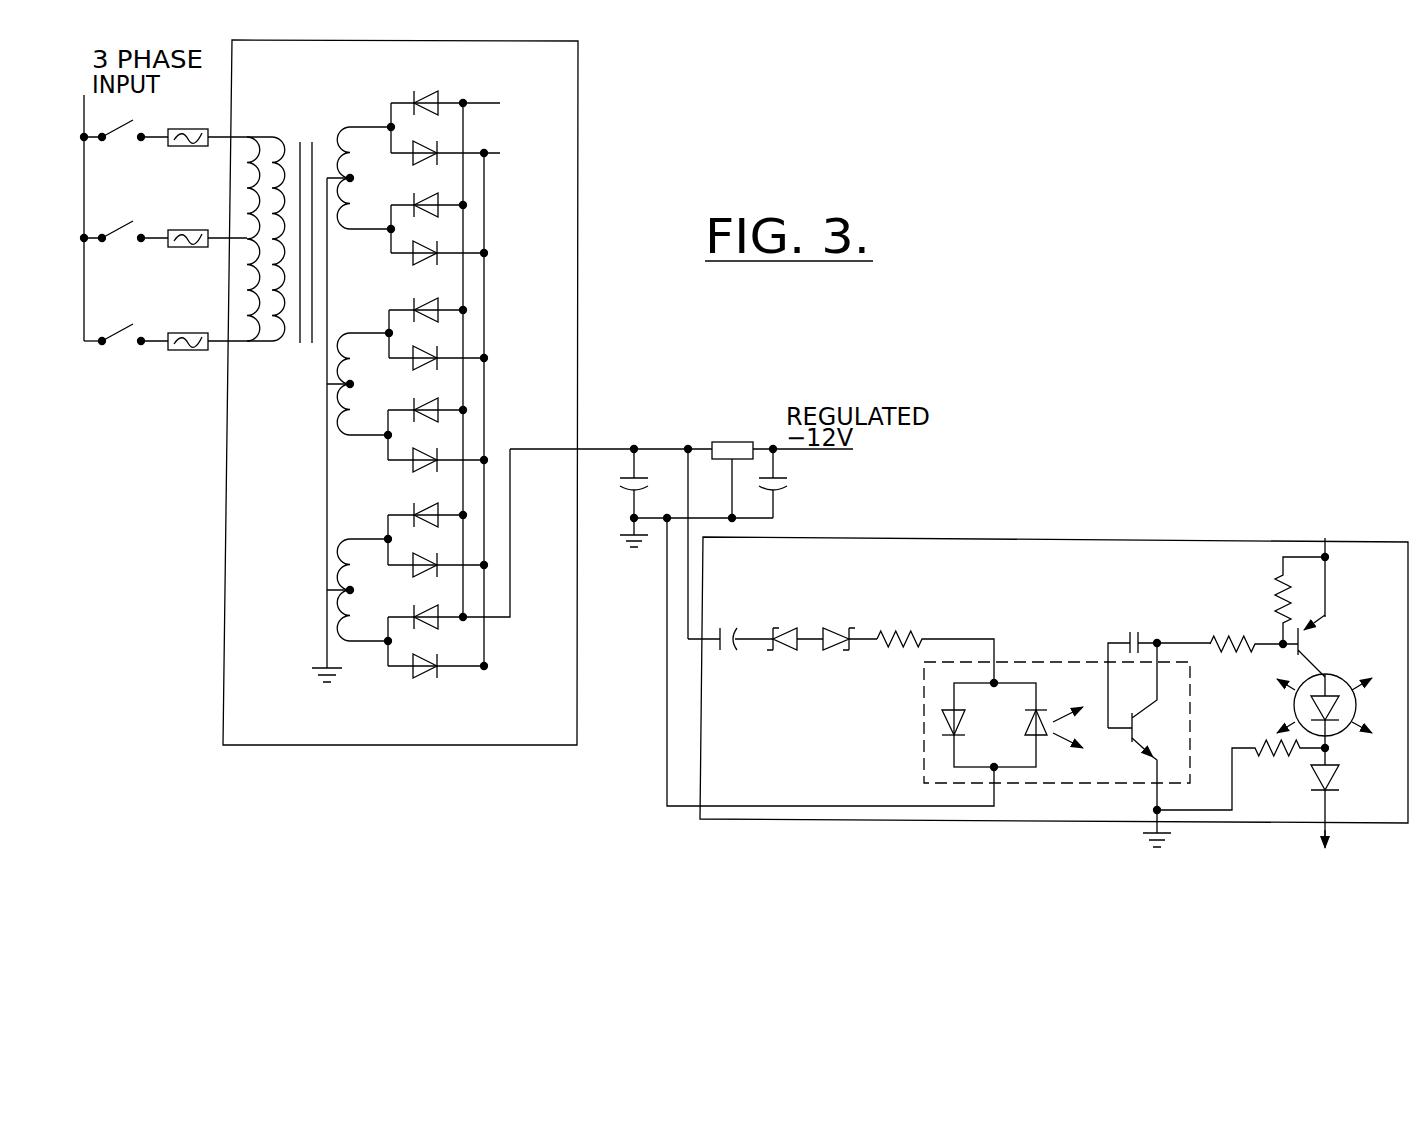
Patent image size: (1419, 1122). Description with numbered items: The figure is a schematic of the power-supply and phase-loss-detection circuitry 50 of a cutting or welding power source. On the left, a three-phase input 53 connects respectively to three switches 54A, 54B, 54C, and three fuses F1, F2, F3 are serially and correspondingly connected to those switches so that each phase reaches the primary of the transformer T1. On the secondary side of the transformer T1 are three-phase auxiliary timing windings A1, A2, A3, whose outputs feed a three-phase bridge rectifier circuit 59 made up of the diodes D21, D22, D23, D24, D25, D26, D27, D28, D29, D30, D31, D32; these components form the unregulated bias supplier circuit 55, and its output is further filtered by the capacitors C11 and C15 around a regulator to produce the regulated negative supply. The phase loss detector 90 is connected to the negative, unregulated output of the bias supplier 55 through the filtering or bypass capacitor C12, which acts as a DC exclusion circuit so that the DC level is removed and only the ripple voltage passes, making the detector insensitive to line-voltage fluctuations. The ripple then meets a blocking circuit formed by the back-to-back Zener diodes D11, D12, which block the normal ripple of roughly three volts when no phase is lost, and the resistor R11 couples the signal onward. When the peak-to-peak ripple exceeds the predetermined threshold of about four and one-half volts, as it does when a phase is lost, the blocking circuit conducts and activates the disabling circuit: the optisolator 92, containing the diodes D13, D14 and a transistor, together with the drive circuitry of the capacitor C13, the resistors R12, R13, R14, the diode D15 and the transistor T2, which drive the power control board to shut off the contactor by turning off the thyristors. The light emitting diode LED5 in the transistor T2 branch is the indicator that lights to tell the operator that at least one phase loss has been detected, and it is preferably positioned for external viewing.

The power supply circuit 50 is at (627, 352).
The three-phase input 53 is at (417, 319).
The switch 54A is at (100, 141).
The switch 54B is at (100, 242).
The switch 54C is at (100, 345).
The unregulated bias supplier circuit 55 is at (578, 80).
The three-phase bridge rectifier circuit 59 is at (441, 397).
The phase loss detector 90 is at (1292, 492).
The optisolator 92 is at (1083, 745).
The fuse F1 is at (206, 124).
The fuse F2 is at (194, 225).
The fuse F3 is at (206, 328).
The transformer T1 is at (287, 225).
The three-phase auxiliary timing winding A1 is at (361, 178).
The three-phase auxiliary timing winding A2 is at (360, 384).
The three-phase auxiliary timing winding A3 is at (359, 590).
The diode D21 is at (438, 680).
The diode D22 is at (427, 630).
The diode D23 is at (438, 578).
The diode D24 is at (427, 528).
The diode D25 is at (438, 473).
The diode D26 is at (427, 423).
The diode D27 is at (438, 372).
The diode D28 is at (428, 323).
The diode D29 is at (439, 267).
The diode D30 is at (429, 218).
The diode D31 is at (445, 166).
The diode D32 is at (445, 117).
The capacitor C11 is at (614, 483).
The capacitor C15 is at (799, 483).
The filtering or bypass capacitor C12 is at (730, 624).
The capacitor C13 is at (1162, 629).
The Zener diode D11 is at (793, 653).
The Zener diode D12 is at (845, 624).
The diode D13 is at (974, 710).
The diode D14 is at (1034, 733).
The diode D15 is at (1350, 798).
The resistor R11 is at (935, 640).
The resistor R12 is at (1252, 631).
The resistor R13 is at (1276, 600).
The resistor R14 is at (1241, 775).
The transistor T2 is at (1296, 646).
The light emitting diode LED5 is at (1344, 711).